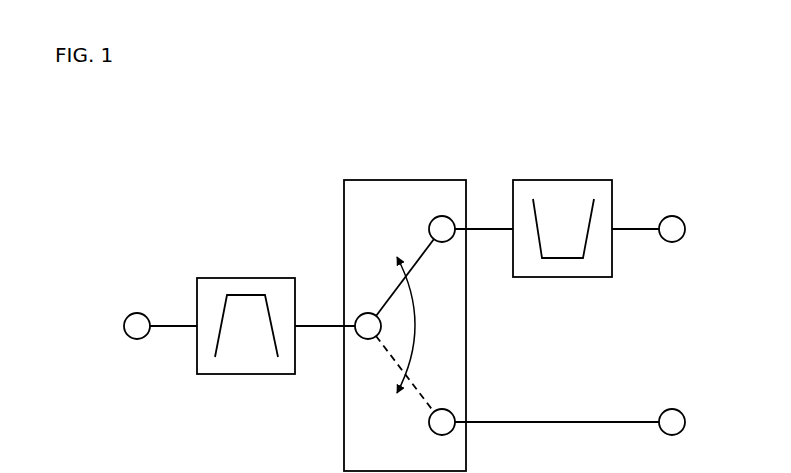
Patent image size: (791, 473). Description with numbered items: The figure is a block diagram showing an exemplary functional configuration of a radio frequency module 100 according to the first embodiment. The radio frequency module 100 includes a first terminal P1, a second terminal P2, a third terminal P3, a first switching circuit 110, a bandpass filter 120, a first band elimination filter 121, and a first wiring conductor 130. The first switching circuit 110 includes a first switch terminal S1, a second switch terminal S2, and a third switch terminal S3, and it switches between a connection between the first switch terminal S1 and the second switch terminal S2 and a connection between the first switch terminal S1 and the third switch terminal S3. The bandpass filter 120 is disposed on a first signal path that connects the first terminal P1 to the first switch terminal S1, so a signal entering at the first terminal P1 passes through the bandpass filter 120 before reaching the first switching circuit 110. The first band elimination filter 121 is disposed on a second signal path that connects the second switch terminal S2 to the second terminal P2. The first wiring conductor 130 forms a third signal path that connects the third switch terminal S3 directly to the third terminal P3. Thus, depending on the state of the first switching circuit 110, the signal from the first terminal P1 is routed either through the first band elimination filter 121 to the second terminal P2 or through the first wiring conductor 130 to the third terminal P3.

The radio frequency module 100 is at (320, 131).
The first switching circuit 110 is at (418, 180).
The bandpass filter 120 is at (244, 278).
The first band elimination filter 121 is at (562, 180).
The first wiring conductor 130 is at (563, 422).
The first switch terminal S1 is at (366, 312).
The second switch terminal S2 is at (444, 214).
The third switch terminal S3 is at (444, 408).
The first terminal P1 is at (119, 328).
The second terminal P2 is at (692, 231).
The third terminal P3 is at (692, 425).